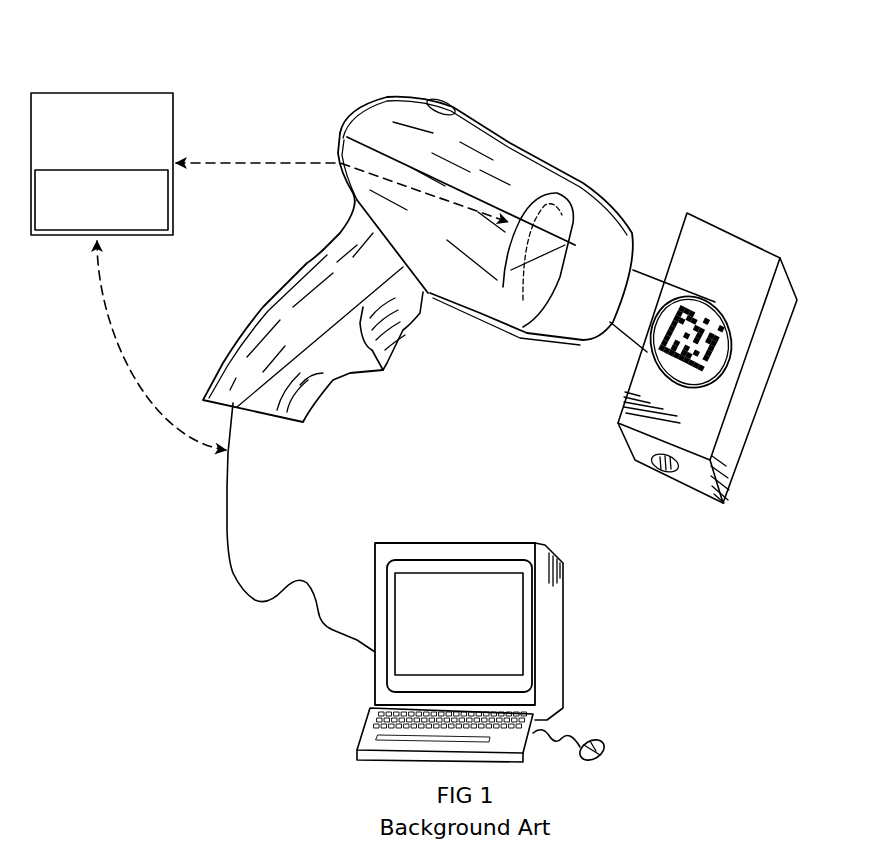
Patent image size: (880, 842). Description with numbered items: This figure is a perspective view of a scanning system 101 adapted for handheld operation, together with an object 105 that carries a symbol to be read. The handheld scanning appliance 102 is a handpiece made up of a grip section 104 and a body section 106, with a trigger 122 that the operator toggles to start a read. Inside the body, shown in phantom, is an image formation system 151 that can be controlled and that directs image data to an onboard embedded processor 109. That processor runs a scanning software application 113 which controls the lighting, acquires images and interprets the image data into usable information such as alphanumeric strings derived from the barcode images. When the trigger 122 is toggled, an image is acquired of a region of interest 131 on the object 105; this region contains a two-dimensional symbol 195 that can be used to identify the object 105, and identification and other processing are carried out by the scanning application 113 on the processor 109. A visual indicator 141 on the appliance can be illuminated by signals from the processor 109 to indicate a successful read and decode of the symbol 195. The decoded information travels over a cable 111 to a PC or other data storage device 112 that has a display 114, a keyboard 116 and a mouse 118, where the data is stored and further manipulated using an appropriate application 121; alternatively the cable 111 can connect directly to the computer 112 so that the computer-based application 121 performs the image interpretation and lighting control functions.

The scanning system 101 is at (429, 356).
The handheld scanning appliance 102 is at (513, 116).
The grip section 104 is at (357, 382).
The object 105 is at (727, 343).
The body section 106 is at (478, 314).
The onboard embedded processor 109 is at (265, 255).
The cable 111 is at (228, 483).
The PC or other data storage device 112 is at (561, 682).
The scanning software application 113 is at (35, 218).
The display 114 is at (515, 659).
The keyboard 116 is at (525, 753).
The mouse 118 is at (597, 738).
The application 121 is at (533, 623).
The trigger 122 is at (413, 332).
The region of interest 131 is at (723, 297).
The visual indicator 141 is at (456, 95).
The image formation system 151 is at (535, 345).
The two-dimensional symbol 195 is at (712, 313).